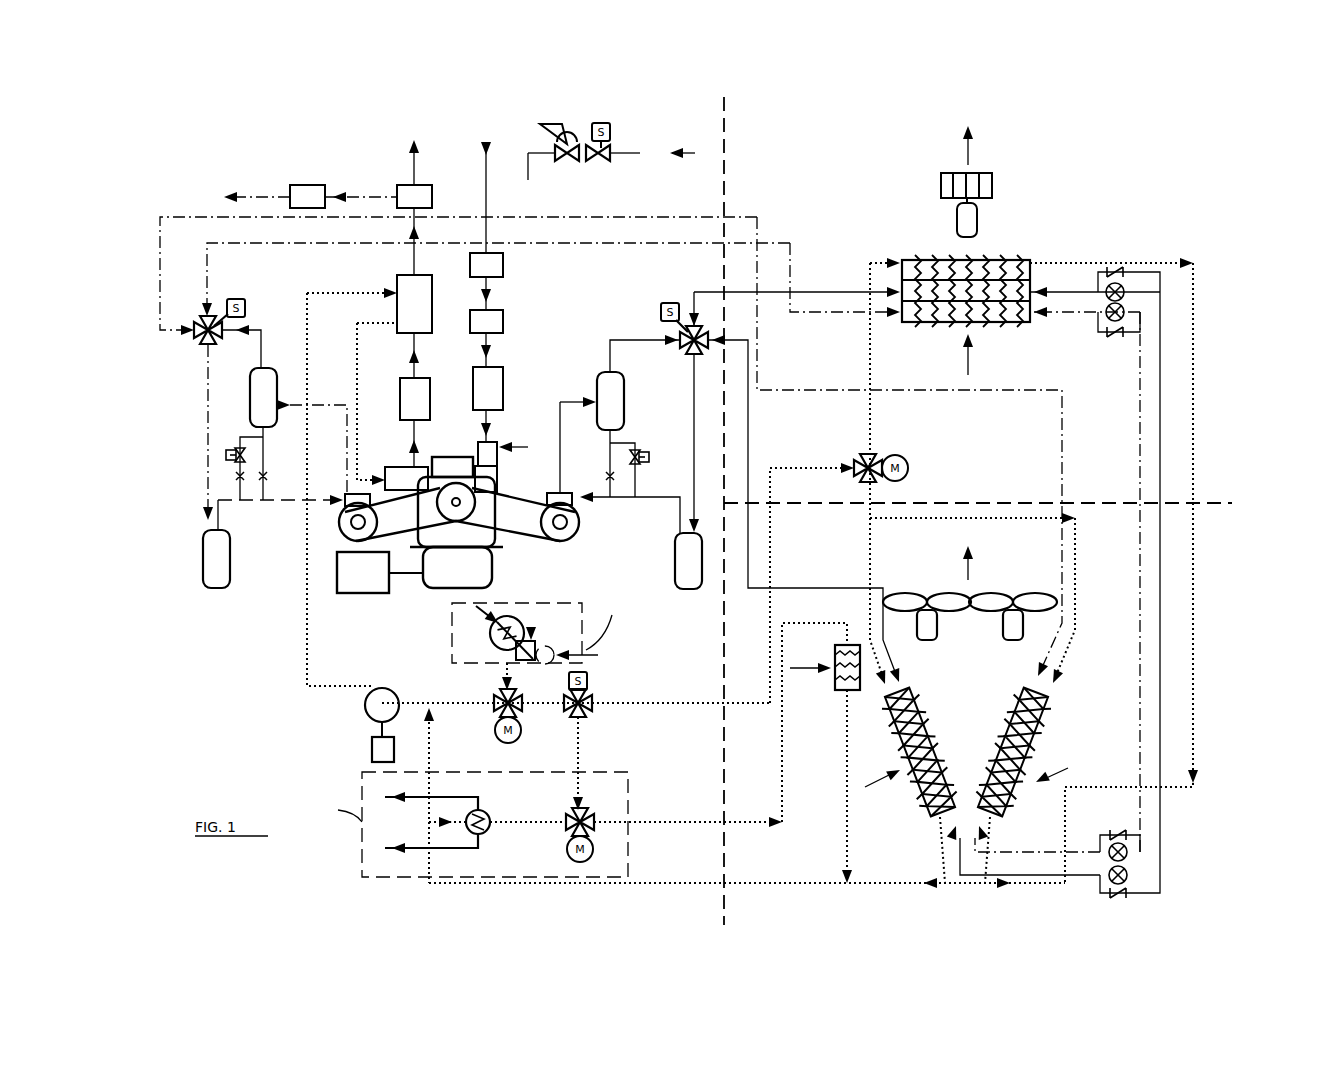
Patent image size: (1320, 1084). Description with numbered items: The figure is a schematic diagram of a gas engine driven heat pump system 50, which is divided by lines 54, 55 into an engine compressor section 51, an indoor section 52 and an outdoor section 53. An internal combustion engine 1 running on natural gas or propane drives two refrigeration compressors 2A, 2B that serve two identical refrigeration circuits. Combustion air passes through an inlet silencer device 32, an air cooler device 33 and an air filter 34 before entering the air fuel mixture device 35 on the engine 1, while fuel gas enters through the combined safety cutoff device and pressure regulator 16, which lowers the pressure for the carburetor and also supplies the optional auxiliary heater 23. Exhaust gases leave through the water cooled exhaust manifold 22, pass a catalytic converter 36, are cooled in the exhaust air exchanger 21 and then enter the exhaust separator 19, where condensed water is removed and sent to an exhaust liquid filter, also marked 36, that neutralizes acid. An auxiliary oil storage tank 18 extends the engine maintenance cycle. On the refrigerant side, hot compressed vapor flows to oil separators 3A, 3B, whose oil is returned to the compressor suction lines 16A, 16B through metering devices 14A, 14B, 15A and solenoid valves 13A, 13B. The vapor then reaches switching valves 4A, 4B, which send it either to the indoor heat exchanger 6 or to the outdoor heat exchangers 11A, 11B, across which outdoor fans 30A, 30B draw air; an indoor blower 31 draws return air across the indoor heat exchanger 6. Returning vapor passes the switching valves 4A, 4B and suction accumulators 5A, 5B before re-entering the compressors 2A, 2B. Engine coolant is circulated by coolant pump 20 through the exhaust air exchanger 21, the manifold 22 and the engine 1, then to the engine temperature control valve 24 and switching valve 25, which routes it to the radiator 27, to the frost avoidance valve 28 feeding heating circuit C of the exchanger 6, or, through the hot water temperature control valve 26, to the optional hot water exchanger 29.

The internal combustion engine 1 is at (462, 455).
The refrigeration compressor 2A is at (558, 543).
The refrigeration compressor 2B is at (345, 532).
The oil separator 3A is at (628, 410).
The oil separator 3B is at (278, 382).
The switching valve 4A is at (692, 348).
The switching valve 4B is at (200, 342).
The suction accumulator 5A is at (675, 565).
The suction accumulator 5B is at (203, 562).
The indoor heat exchanger 6 is at (903, 260).
The outdoor heat exchanger 11A is at (920, 702).
The outdoor heat exchanger 11B is at (1000, 740).
The solenoid valve 13A is at (650, 455).
The solenoid valve 13B is at (240, 446).
The metering device 14A is at (605, 468).
The metering device 14B is at (266, 466).
The metering device 15A is at (237, 477).
The safety cutoff device and pressure regulator 16 is at (585, 160).
The compressor suction line 16A is at (603, 500).
The compressor suction line 16B is at (275, 503).
The auxiliary oil storage tank 18 is at (364, 596).
The exhaust separator 19 is at (434, 190).
The coolant pump 20 is at (398, 694).
The exhaust air exchanger 21 is at (395, 288).
The water cooled exhaust manifold 22 is at (400, 464).
The auxiliary heater 23 is at (492, 634).
The engine temperature control valve 24 is at (496, 712).
The switching valve 25 is at (592, 712).
The hot water temperature control valve 26 is at (592, 812).
The radiator 27 is at (858, 640).
The frost avoidance valve 28 is at (880, 458).
The hot water exchanger 29 is at (488, 812).
The outdoor fan 30A is at (930, 594).
The outdoor fan 30B is at (1020, 594).
The indoor blower 31 is at (996, 190).
The inlet silencer device 32 is at (467, 272).
The air cooler device 33 is at (467, 328).
The air filter 34 is at (470, 383).
The air fuel mixture device 35 is at (497, 442).
The catalytic converter 36 is at (300, 182).
The gas engine driven heat pump system 50 is at (298, 737).
The engine compressor section 51 is at (518, 896).
The indoor section 52 is at (873, 148).
The outdoor section 53 is at (838, 898).
The dividing line 54 is at (1228, 500).
The dividing line 55 is at (722, 110).